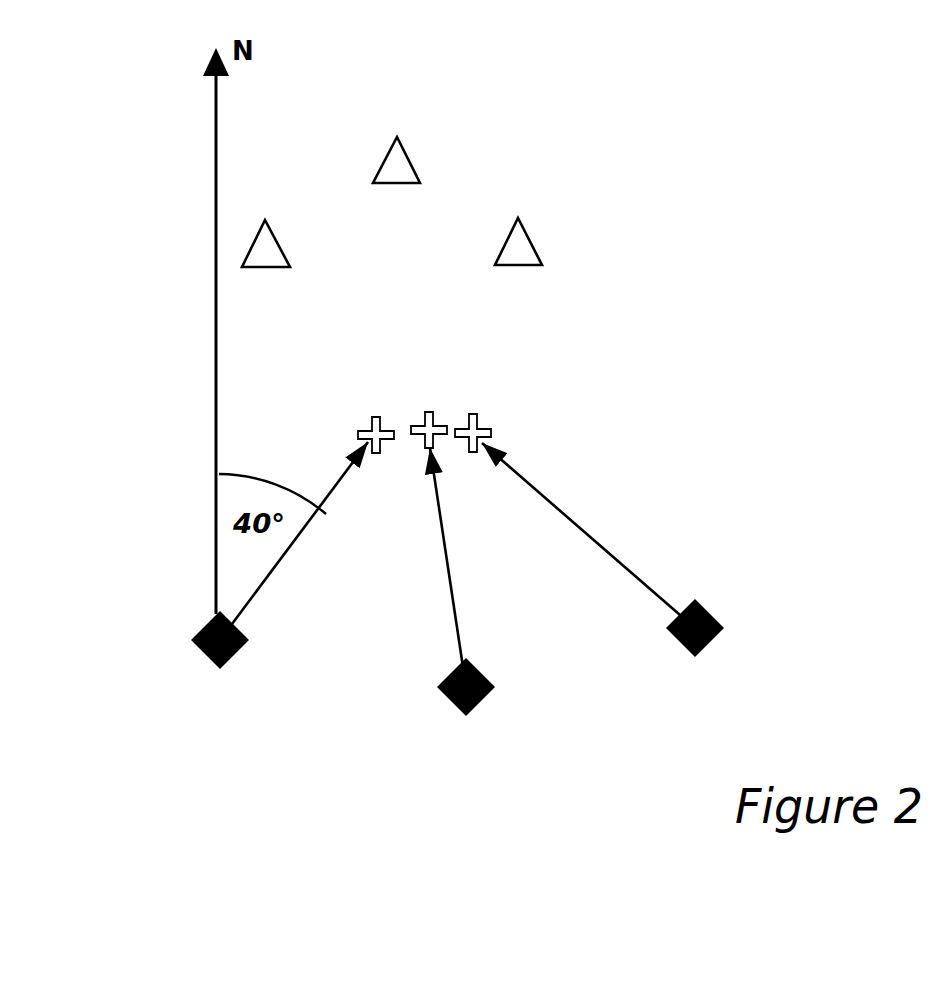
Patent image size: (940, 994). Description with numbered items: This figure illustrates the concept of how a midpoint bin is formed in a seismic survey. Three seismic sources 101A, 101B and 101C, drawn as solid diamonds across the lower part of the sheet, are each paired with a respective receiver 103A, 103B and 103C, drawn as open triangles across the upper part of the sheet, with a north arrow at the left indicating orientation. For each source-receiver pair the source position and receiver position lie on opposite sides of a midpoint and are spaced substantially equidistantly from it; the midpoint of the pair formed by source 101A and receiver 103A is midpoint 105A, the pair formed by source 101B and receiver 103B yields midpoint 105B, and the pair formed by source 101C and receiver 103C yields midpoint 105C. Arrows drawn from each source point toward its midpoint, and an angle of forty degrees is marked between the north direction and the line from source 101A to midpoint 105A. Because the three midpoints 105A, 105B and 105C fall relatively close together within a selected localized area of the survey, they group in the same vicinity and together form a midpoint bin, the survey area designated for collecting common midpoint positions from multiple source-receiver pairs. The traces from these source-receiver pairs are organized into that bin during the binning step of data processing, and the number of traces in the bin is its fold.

The source 101A is at (192, 640).
The source 101B is at (440, 712).
The source 101C is at (722, 618).
The receiver 103A is at (518, 218).
The receiver 103B is at (397, 137).
The receiver 103C is at (265, 220).
The midpoint 105A is at (377, 418).
The midpoint 105B is at (429, 412).
The midpoint 105C is at (491, 433).